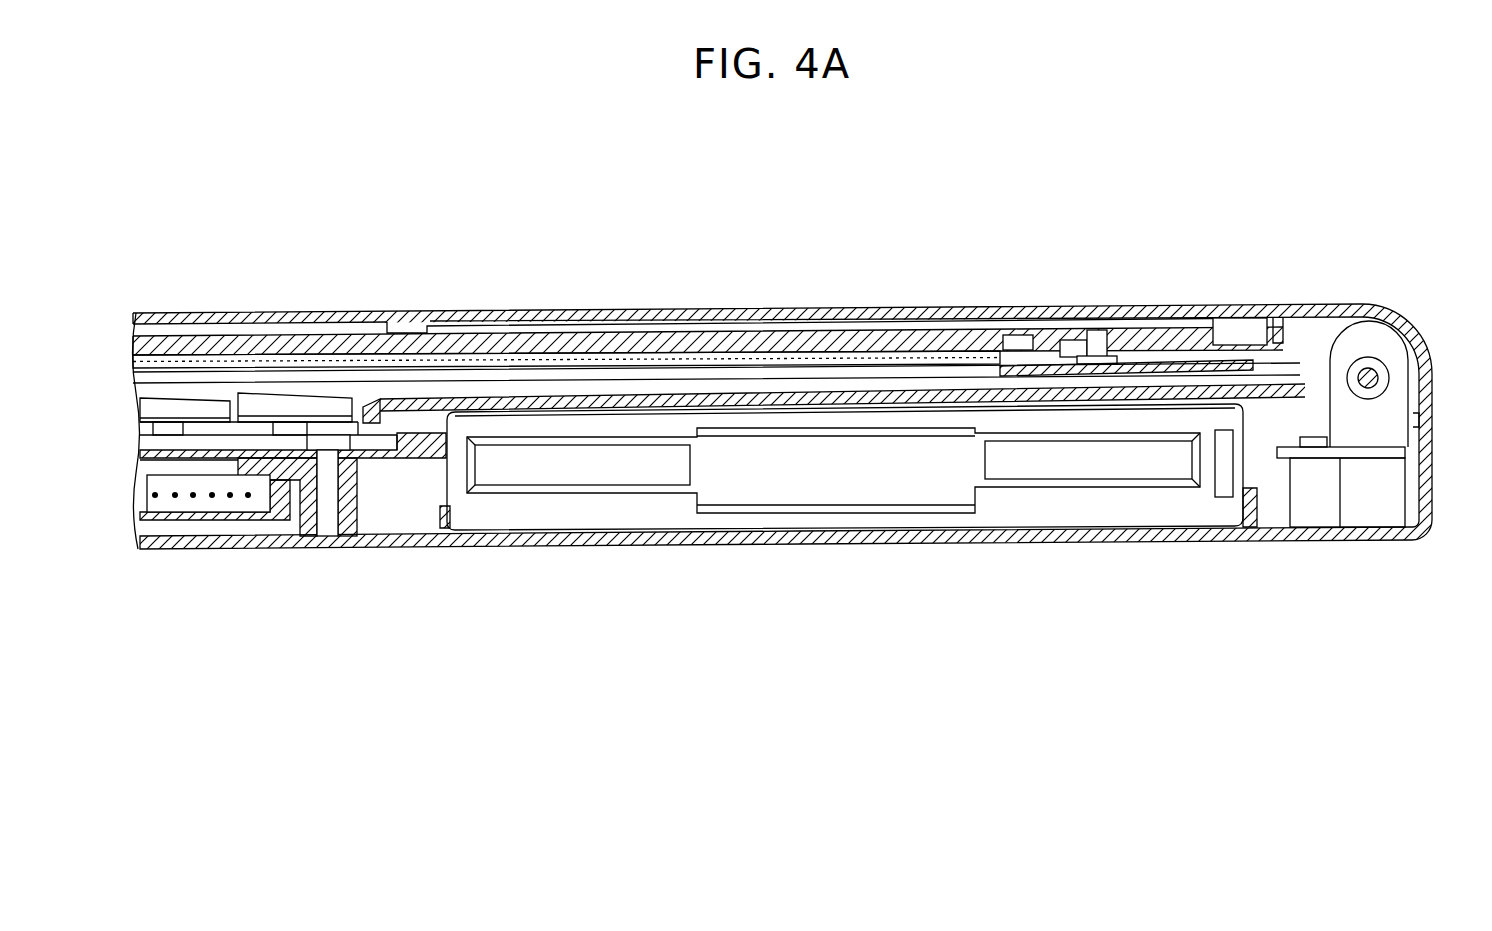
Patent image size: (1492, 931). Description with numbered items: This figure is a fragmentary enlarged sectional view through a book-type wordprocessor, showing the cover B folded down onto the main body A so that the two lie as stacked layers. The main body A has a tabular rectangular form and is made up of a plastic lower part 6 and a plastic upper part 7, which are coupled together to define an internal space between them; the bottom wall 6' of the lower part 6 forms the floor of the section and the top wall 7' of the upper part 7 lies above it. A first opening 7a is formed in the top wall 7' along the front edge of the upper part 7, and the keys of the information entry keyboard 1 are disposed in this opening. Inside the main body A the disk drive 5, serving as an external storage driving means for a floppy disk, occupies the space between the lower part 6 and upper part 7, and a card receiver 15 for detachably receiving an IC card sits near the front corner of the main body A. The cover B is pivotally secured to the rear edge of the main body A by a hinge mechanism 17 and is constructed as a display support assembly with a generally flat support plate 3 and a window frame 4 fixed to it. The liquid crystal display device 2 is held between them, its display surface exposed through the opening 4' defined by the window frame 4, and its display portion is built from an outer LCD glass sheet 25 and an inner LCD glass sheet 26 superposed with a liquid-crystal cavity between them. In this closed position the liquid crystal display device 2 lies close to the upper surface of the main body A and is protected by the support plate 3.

The information entry keyboard 1 is at (294, 392).
The liquid crystal display device 2 is at (398, 352).
The support plate 3 is at (573, 318).
The window frame 4 is at (1246, 290).
The opening 4' is at (1133, 305).
The disk drive 5 is at (1097, 512).
The lower part 6 is at (1142, 501).
The bottom wall 6' is at (470, 574).
The upper part 7 is at (1397, 357).
The top wall 7' is at (842, 321).
The first opening 7a is at (352, 410).
The card receiver 15 is at (220, 506).
The hinge mechanism 17 is at (1378, 372).
The outer LCD glass sheet 25 is at (885, 357).
The inner LCD glass sheet 26 is at (823, 353).
The main body A is at (775, 546).
The cover B is at (730, 309).